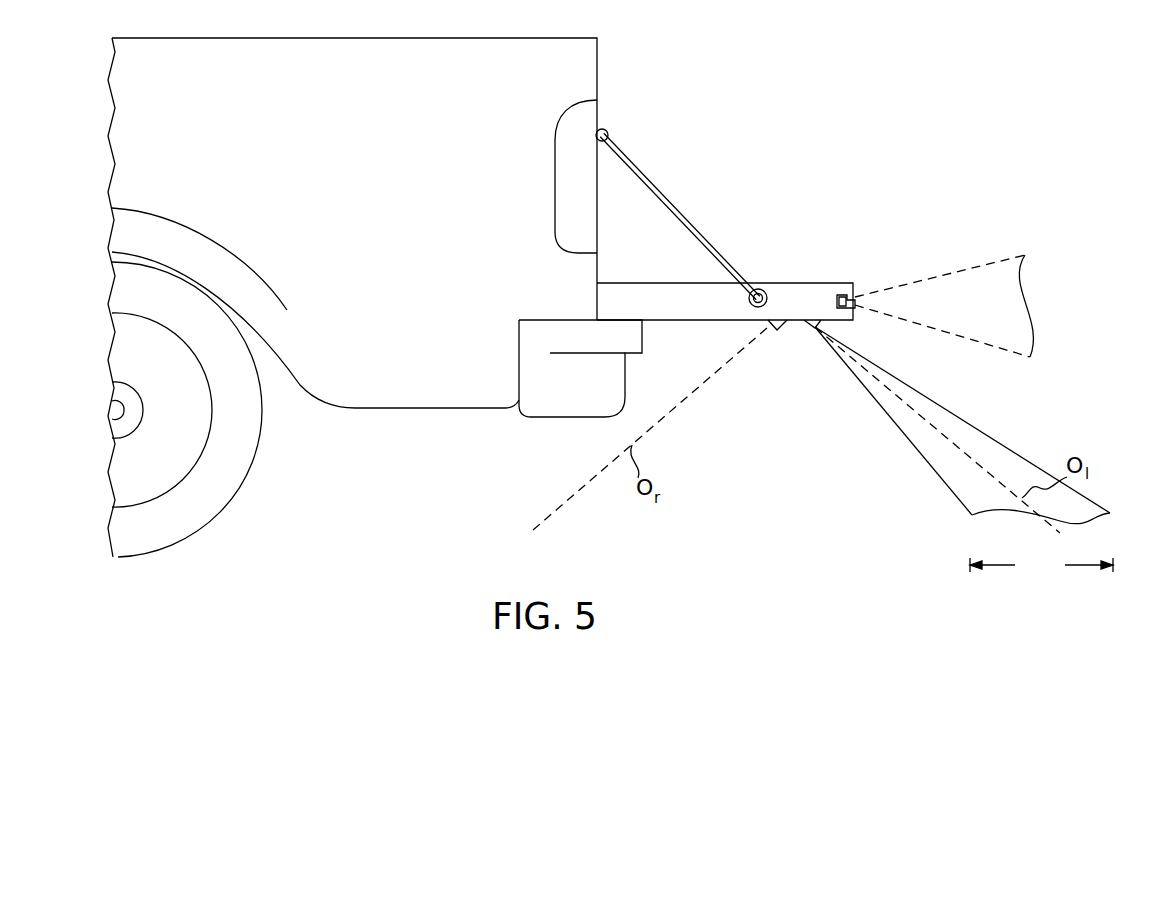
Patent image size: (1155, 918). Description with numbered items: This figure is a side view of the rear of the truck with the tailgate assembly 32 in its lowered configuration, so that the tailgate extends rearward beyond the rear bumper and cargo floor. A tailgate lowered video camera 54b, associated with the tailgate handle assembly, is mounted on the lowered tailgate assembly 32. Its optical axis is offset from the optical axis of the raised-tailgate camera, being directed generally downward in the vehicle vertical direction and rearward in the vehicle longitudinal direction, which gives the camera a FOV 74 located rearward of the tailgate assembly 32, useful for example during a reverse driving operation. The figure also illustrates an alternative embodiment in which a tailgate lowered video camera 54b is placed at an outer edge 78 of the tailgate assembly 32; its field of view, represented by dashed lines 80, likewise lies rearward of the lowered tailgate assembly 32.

The tailgate assembly 32 is at (772, 262).
The tailgate lowered video camera 54b is at (847, 300).
The outer edge 78 is at (855, 298).
The dashed lines 80 is at (975, 268).
The FOV 74 is at (1041, 567).